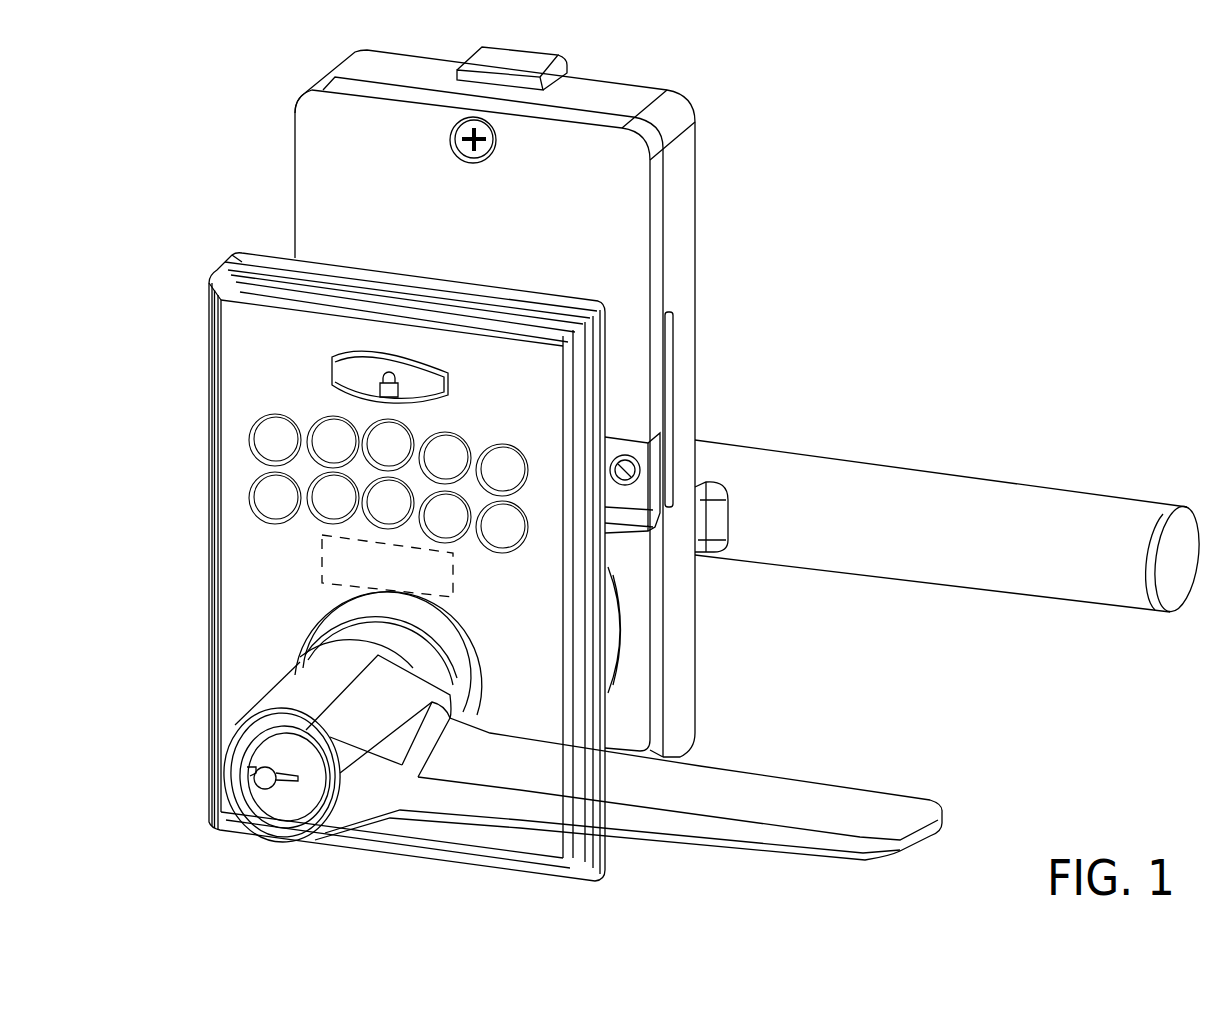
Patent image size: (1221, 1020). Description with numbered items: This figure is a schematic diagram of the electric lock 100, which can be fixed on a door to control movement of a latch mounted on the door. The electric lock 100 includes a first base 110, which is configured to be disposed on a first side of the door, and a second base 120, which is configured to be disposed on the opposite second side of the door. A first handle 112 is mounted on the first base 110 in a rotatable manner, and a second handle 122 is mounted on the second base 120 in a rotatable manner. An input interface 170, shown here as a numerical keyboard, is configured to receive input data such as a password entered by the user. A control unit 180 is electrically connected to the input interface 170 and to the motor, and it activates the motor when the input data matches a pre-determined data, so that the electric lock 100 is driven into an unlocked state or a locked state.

The electric lock 100 is at (938, 133).
The first base 110 is at (230, 583).
The first handle 112 is at (770, 795).
The second base 120 is at (683, 241).
The second handle 122 is at (995, 522).
The input interface 170 is at (232, 465).
The control unit 180 is at (404, 582).